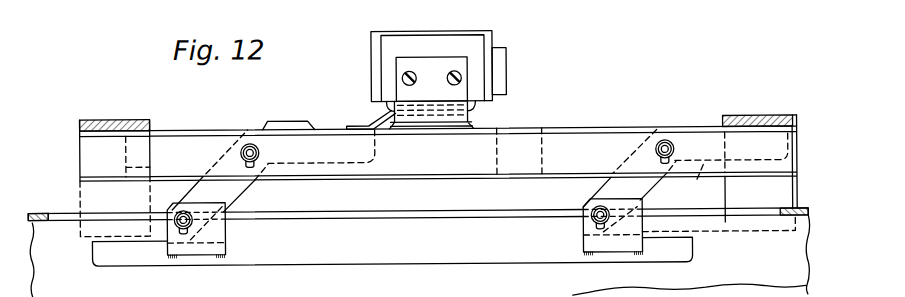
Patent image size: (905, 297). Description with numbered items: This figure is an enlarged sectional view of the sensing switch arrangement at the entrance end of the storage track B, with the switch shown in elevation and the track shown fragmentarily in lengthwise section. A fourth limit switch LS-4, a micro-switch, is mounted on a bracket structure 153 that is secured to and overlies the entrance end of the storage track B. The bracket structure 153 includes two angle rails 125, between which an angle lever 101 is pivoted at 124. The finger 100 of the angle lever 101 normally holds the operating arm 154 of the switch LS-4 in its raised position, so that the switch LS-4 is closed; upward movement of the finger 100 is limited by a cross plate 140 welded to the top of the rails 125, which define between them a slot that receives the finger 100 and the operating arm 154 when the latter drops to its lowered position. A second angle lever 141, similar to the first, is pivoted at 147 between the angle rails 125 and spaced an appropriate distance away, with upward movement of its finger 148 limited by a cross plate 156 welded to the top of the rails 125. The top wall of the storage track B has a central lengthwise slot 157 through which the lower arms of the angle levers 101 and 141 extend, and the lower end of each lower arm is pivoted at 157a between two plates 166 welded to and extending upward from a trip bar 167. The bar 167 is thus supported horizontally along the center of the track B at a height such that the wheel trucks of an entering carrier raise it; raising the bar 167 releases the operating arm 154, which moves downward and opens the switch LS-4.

The fourth limit switch LS-4 is at (427, 43).
The bracket structure 153 is at (223, 127).
The cross plate 156 is at (760, 116).
The cross plate 140 is at (293, 119).
The operating arm 154 is at (384, 132).
The pivot 124 is at (260, 151).
The pivot 147 is at (661, 143).
The finger 100 is at (330, 172).
The angle lever 101 is at (239, 194).
The angle rails 125 is at (435, 169).
The second angle lever 141 is at (616, 192).
The finger 148 is at (698, 181).
The central lengthwise slot 157 is at (288, 218).
The pivot 157a is at (592, 217).
The storage track B is at (35, 210).
The plates 166 is at (207, 244).
The trip bar 167 is at (496, 264).